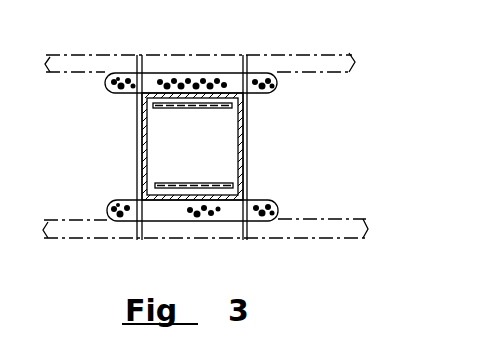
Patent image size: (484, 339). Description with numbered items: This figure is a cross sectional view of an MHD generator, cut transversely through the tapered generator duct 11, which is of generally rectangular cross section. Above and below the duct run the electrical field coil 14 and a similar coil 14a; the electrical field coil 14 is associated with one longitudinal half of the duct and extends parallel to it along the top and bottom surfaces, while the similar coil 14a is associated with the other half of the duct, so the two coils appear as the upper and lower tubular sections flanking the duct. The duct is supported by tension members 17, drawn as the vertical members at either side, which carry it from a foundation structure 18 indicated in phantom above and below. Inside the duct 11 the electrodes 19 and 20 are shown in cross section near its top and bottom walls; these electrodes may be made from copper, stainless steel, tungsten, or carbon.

The MHD generator duct 11 is at (240, 137).
The electrical field coil 14 is at (229, 79).
The similar coil 14a is at (163, 78).
The tension members 17 is at (137, 138).
The foundation structure 18 is at (300, 56).
The electrode 19 is at (176, 108).
The electrode 20 is at (212, 180).